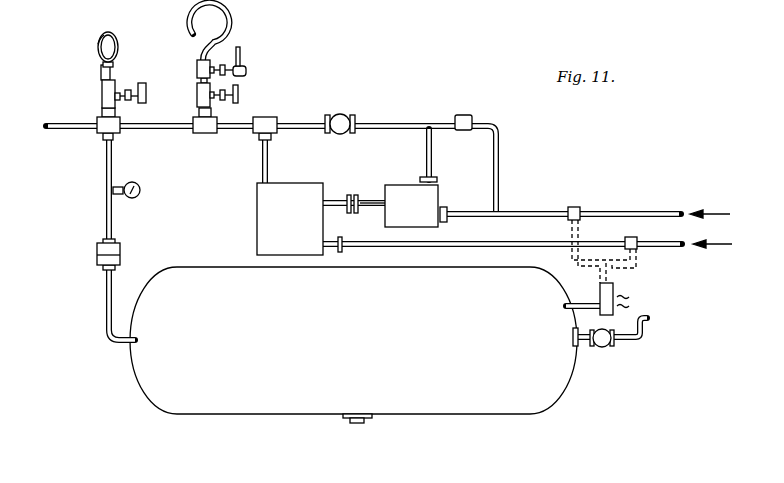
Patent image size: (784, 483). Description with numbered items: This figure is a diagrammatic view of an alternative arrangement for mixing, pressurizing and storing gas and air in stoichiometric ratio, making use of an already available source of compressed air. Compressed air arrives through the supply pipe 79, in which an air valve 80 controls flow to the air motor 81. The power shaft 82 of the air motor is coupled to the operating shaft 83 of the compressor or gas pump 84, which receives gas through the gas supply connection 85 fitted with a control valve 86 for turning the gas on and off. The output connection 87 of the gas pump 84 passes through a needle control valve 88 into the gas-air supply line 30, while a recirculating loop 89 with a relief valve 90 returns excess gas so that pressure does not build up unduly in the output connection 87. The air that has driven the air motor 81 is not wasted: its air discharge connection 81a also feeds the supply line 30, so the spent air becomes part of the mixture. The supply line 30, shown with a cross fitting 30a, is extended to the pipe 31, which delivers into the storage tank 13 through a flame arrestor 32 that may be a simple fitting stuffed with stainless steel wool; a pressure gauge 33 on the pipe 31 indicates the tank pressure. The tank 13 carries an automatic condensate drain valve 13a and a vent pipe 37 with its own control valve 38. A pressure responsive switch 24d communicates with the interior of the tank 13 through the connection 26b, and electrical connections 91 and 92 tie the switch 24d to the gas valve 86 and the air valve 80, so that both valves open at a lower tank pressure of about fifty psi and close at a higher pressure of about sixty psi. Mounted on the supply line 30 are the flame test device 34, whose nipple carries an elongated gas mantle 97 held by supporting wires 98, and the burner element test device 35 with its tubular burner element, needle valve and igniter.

The storage tank 13 is at (140, 388).
The automatic condensate drain valve 13a is at (348, 418).
The pressure responsive switch 24d is at (615, 291).
The connection 26b is at (580, 303).
The gas-air supply line 30 is at (236, 118).
The cross fitting 30a is at (68, 121).
The pipe 31 is at (104, 160).
The flame arrestor 32 is at (97, 248).
The pressure gauge 33 is at (140, 192).
The flame test device 34 is at (90, 82).
The burner element test device 35 is at (229, 40).
The vent pipe 37 is at (646, 331).
The control valve 38 is at (607, 347).
The supply pipe 79 is at (664, 243).
The valve 80 is at (637, 248).
The air motor 81 is at (290, 183).
The air discharge connection 81a is at (262, 161).
The power shaft 82 is at (336, 196).
The operating shaft 83 is at (370, 198).
The gas pump 84 is at (428, 197).
The gas supply connection 85 is at (630, 209).
The control valve 86 is at (574, 206).
The output connection 87 is at (432, 154).
The needle control valve 88 is at (346, 114).
The recirculating loop 89 is at (501, 150).
The relief valve 90 is at (464, 114).
The electrical connection 91 is at (568, 228).
The electrical connection 92 is at (616, 263).
The gas mantle 97 is at (110, 45).
The supporting wires 98 is at (97, 44).